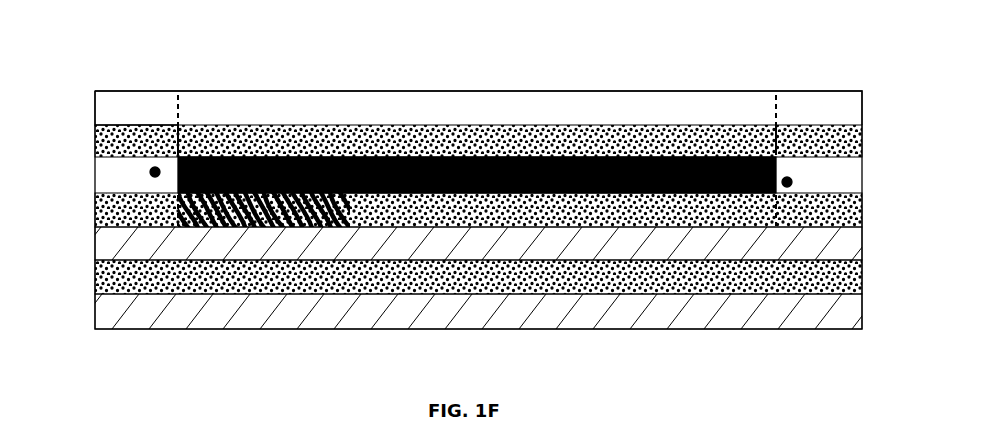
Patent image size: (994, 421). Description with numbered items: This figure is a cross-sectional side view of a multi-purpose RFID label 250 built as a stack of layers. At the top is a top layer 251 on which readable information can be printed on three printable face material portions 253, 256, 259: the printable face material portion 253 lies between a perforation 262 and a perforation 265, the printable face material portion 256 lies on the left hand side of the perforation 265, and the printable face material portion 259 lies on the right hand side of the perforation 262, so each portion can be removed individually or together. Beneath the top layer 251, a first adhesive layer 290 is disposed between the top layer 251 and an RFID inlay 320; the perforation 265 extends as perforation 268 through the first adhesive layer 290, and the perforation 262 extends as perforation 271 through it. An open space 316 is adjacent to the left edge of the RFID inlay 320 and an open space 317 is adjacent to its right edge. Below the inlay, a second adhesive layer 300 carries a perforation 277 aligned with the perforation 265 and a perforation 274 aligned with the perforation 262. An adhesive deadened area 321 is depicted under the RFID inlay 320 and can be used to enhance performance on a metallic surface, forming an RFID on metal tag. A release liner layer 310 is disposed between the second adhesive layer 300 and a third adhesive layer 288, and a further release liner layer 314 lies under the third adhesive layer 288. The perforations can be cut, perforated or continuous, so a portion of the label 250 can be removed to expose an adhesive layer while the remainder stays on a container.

The multi-purpose RFID label 250 is at (596, 35).
The top layer 251 is at (100, 103).
The printable face material portion 256 is at (115, 89).
The printable face material portion 253 is at (646, 89).
The printable face material portion 259 is at (818, 89).
The perforation 265 is at (179, 94).
The perforation 262 is at (776, 90).
The perforation 268 is at (183, 140).
The perforation 271 is at (770, 140).
The first adhesive layer 290 is at (100, 140).
The RFID inlay 320 is at (498, 155).
The open space 316 is at (152, 171).
The open space 317 is at (791, 180).
The second adhesive layer 300 is at (100, 210).
The adhesive deadened area 321 is at (253, 230).
The perforation 277 is at (175, 210).
The perforation 274 is at (779, 209).
The release liner layer 310 is at (100, 243).
The third adhesive layer 288 is at (864, 277).
The release liner layer 314 is at (100, 313).